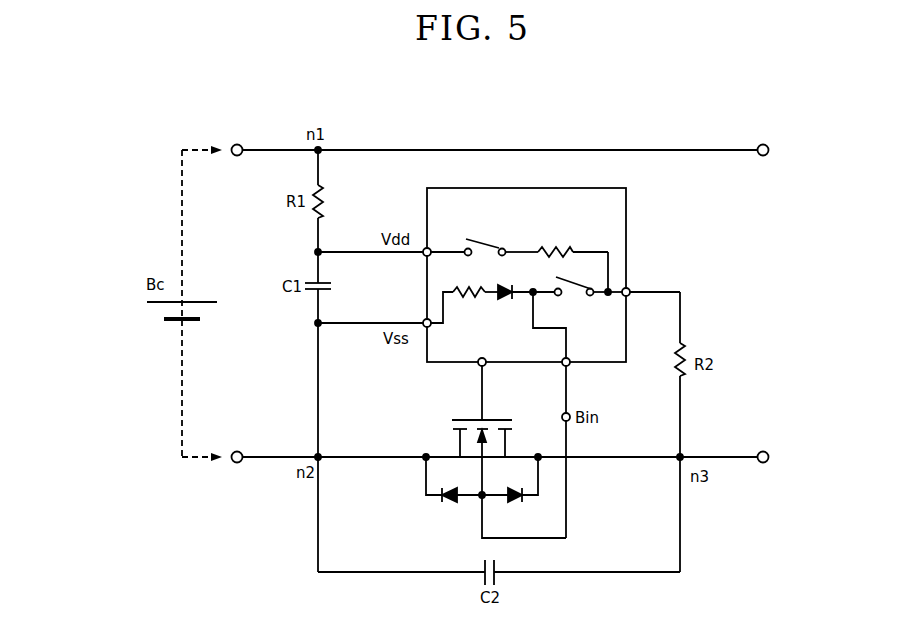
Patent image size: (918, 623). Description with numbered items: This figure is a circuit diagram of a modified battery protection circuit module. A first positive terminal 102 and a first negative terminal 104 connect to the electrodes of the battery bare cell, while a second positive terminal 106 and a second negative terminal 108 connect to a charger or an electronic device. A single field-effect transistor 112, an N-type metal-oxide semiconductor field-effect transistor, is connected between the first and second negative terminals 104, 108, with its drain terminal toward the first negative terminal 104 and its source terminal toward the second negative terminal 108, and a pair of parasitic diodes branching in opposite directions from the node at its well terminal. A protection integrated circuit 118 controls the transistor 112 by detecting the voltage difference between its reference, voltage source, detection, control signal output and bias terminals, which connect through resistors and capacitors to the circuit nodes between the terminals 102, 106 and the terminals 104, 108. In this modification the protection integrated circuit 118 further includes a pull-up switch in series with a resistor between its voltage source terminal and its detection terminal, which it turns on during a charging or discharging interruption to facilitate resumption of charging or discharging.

The first positive terminal 102 is at (237, 144).
The first negative terminal 104 is at (237, 451).
The second positive terminal 106 is at (763, 144).
The second negative terminal 108 is at (763, 451).
The single field-effect transistor 112 is at (434, 435).
The protection integrated circuit 118 is at (527, 188).